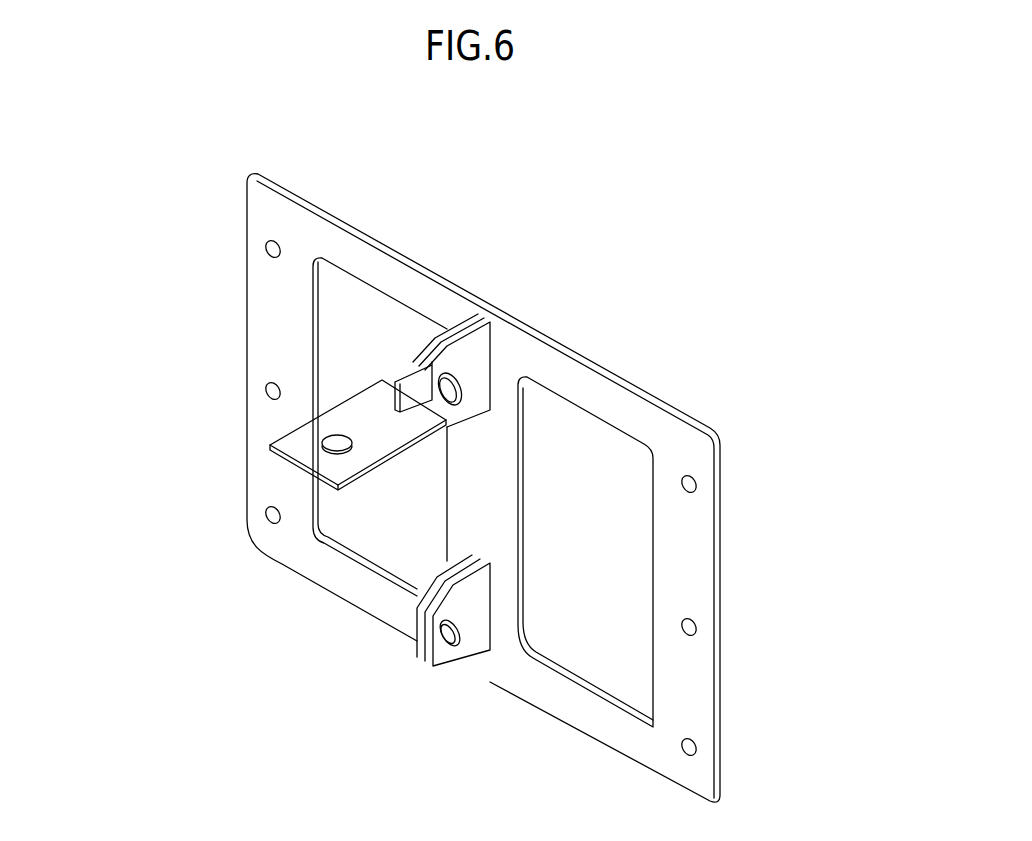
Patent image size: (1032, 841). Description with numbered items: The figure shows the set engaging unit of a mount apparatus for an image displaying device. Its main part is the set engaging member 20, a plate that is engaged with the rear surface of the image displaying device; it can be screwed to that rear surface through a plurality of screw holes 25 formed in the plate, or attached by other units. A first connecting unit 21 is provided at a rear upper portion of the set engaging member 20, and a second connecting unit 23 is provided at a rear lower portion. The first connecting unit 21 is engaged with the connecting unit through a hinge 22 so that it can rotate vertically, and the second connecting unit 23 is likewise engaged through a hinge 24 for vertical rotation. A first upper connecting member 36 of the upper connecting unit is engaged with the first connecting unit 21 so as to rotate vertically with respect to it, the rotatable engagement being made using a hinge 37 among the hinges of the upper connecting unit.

The set engaging member 20 is at (295, 565).
The first connecting unit 21 is at (445, 323).
The hinge 22 is at (527, 285).
The second connecting unit 23 is at (482, 680).
The hinge 24 is at (458, 646).
The screw holes 25 is at (267, 390).
The first upper connecting member 36 is at (309, 316).
The hinge 37 is at (322, 437).